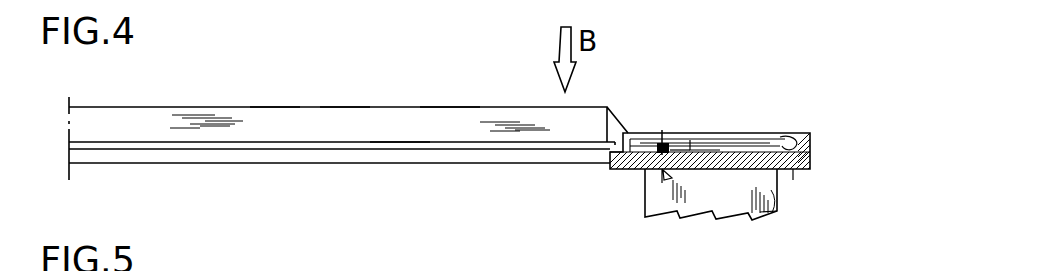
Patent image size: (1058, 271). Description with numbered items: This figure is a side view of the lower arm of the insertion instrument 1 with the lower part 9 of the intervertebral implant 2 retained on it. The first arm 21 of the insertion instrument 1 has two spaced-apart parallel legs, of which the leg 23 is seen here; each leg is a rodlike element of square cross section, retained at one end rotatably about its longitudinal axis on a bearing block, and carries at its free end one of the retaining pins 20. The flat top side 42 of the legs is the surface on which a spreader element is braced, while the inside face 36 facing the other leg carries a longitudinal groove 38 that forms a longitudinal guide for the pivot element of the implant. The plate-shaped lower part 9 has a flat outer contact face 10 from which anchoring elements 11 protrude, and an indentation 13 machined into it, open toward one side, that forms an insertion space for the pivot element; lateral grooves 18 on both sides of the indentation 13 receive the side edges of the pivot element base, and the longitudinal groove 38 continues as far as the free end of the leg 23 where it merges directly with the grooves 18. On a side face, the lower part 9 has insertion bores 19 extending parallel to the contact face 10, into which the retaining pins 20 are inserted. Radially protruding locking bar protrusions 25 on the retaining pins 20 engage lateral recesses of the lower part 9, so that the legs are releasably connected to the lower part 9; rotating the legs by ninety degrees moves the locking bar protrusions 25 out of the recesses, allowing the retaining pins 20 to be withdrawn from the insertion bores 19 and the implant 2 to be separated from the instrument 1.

The insertion instrument 1 is at (120, 167).
The intervertebral implant 2 is at (824, 122).
The lower part 9 is at (814, 169).
The outer contact face 10 is at (792, 173).
The anchoring elements 11 is at (775, 213).
The indentation 13 is at (765, 145).
The lateral grooves 18 is at (785, 133).
The insertion bores 19 is at (702, 130).
The retaining pins 20 is at (692, 130).
The first arm 21 is at (168, 106).
The leg 23 is at (284, 118).
The locking bar protrusions 25 is at (660, 130).
The inside face 36 is at (345, 123).
The longitudinal groove 38 is at (400, 148).
The flat top side 42 is at (453, 108).